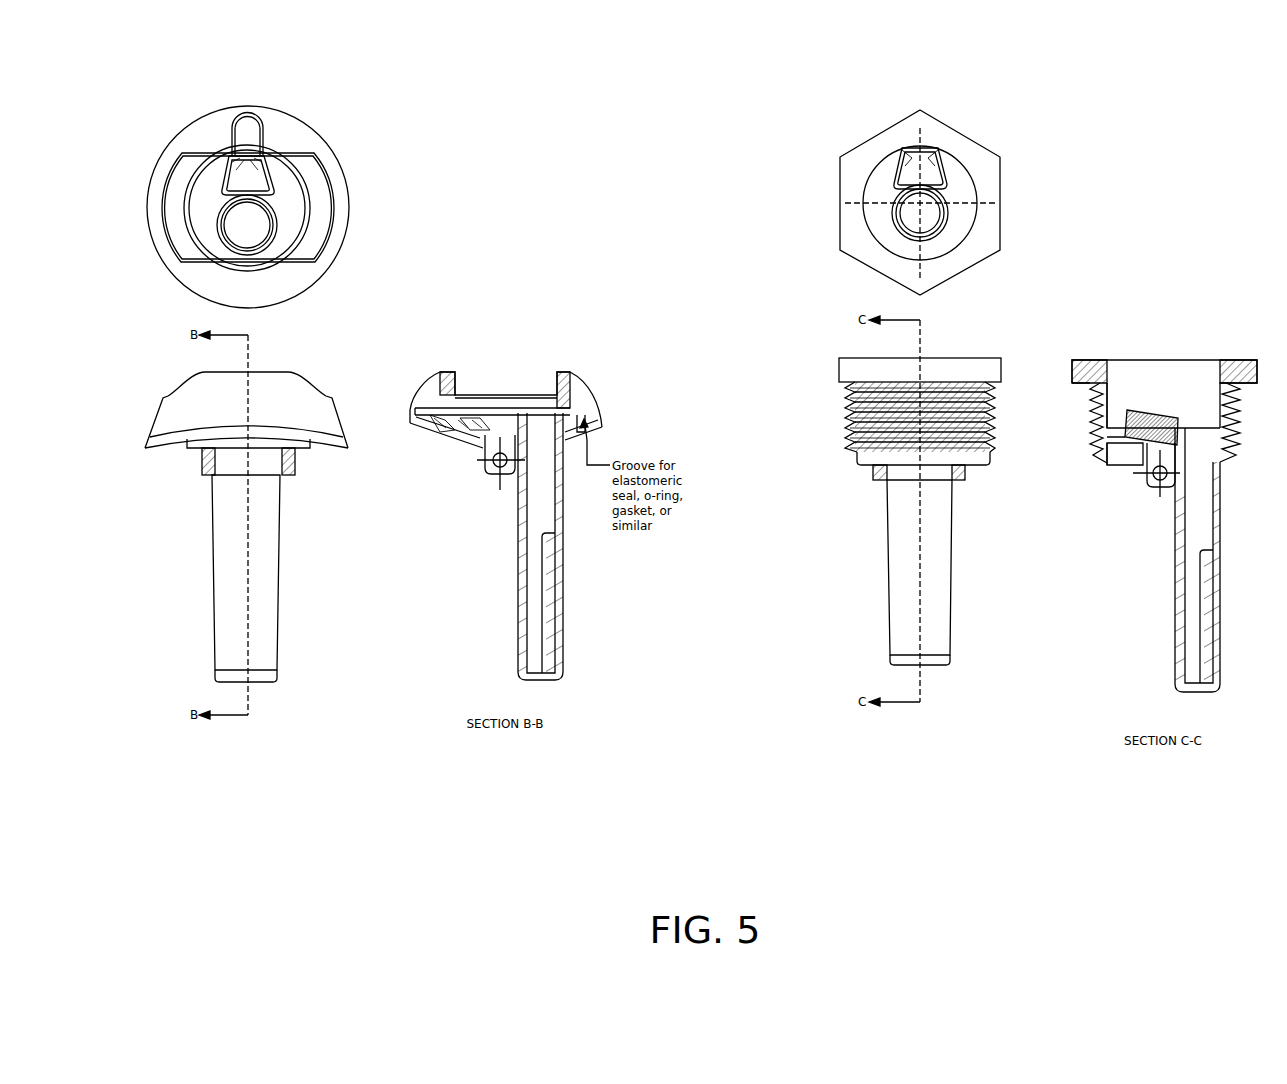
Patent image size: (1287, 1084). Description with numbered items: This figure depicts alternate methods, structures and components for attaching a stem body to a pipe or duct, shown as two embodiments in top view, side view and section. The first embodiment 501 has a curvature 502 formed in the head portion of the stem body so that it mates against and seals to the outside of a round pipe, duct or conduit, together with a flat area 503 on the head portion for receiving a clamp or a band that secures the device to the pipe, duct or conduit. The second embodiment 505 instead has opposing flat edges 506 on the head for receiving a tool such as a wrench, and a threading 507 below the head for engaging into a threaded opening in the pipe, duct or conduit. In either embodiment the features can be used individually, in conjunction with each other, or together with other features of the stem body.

The embodiment 501 is at (327, 77).
The curvature 502 is at (332, 447).
The flat area 503 is at (506, 389).
The embodiment 505 is at (1040, 77).
The opposing flat edges 506 is at (1004, 229).
The threading 507 is at (1099, 466).